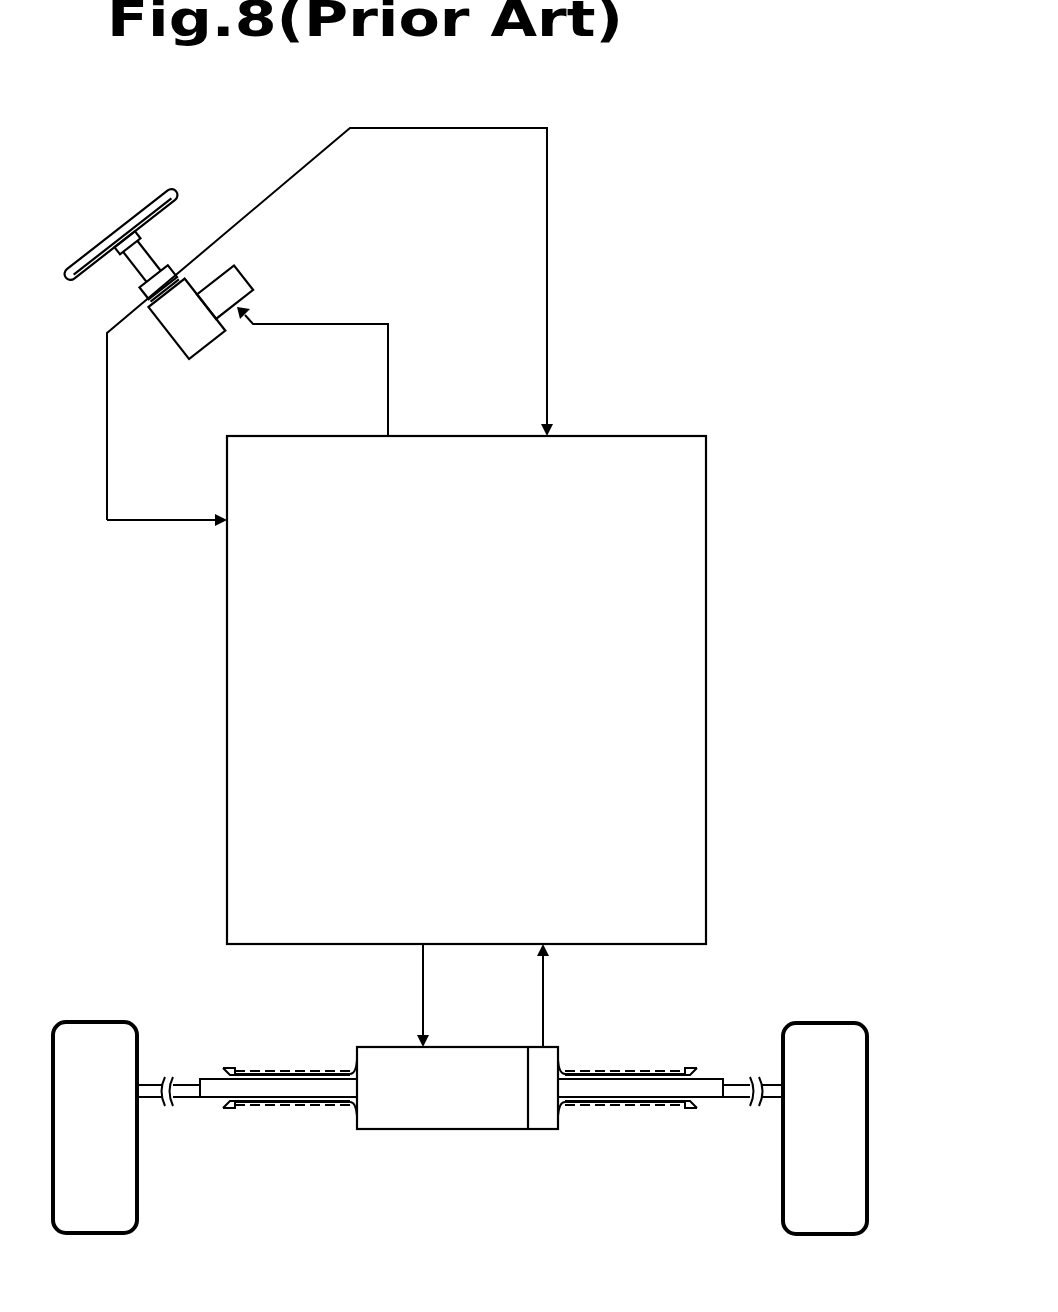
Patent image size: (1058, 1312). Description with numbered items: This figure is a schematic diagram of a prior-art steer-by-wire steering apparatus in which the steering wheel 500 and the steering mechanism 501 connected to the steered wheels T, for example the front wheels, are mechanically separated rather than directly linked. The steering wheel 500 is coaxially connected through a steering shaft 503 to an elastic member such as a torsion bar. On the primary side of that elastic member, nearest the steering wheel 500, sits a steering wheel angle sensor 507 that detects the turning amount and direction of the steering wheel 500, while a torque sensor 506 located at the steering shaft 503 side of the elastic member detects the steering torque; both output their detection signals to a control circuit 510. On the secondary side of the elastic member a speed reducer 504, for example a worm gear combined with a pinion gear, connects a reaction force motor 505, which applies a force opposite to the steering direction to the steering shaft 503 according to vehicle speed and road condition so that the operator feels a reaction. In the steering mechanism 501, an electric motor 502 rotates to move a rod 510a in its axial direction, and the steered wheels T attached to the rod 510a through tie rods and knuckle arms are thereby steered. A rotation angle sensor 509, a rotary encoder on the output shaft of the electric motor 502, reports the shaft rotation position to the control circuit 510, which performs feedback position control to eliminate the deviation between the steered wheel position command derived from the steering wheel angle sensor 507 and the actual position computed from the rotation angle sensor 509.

The steering wheel 500 is at (157, 198).
The steering shaft 503 is at (150, 263).
The speed reducer 504 is at (198, 345).
The reaction force motor 505 is at (247, 280).
The torque sensor 506 is at (158, 306).
The steering wheel angle sensor 507 is at (140, 282).
The control circuit 510 is at (706, 695).
The rod 510a is at (272, 1092).
The electric motor 502 is at (436, 1123).
The rotation angle sensor 509 is at (543, 1123).
The steering mechanism 501 is at (460, 1149).
The steered wheels T is at (137, 1190).